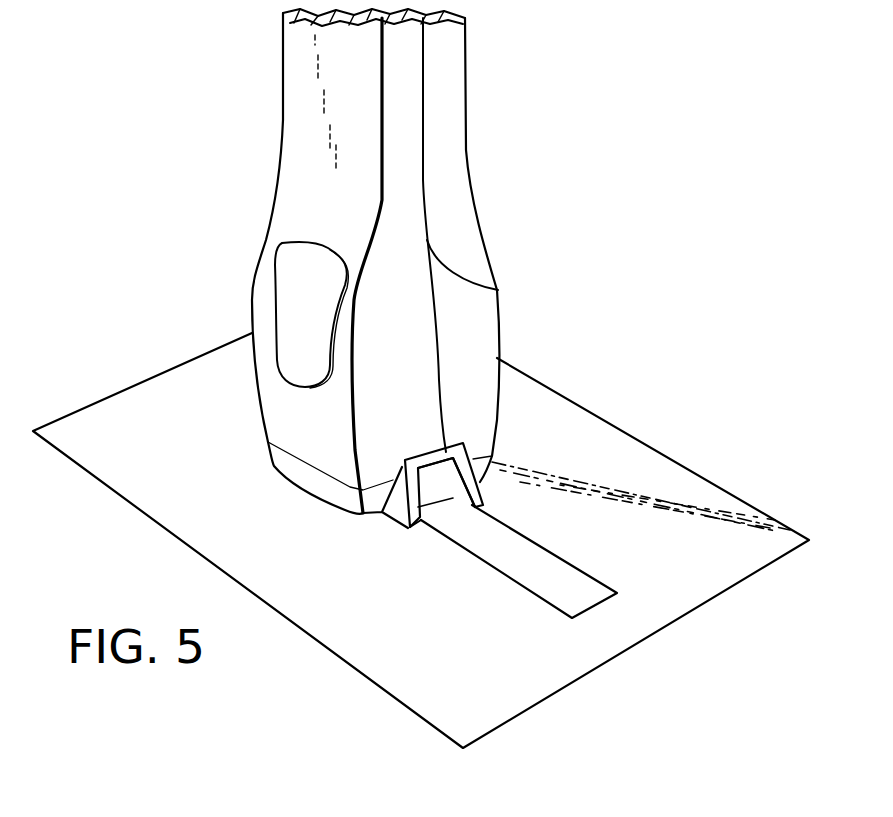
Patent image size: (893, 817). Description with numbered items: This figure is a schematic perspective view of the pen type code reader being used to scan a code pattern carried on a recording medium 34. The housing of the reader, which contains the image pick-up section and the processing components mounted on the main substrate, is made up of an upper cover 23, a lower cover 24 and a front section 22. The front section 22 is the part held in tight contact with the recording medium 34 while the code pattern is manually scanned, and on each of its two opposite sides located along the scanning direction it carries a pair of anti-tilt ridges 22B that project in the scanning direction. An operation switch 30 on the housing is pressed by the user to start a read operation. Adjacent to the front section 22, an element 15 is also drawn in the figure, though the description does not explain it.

The tape 15 is at (557, 592).
The front section 22 is at (300, 478).
The anti-tilt ridges 22B is at (462, 492).
The upper cover 23 is at (293, 131).
The lower cover 24 is at (452, 112).
The operation switch 30 is at (286, 283).
The recording medium 34 is at (640, 455).